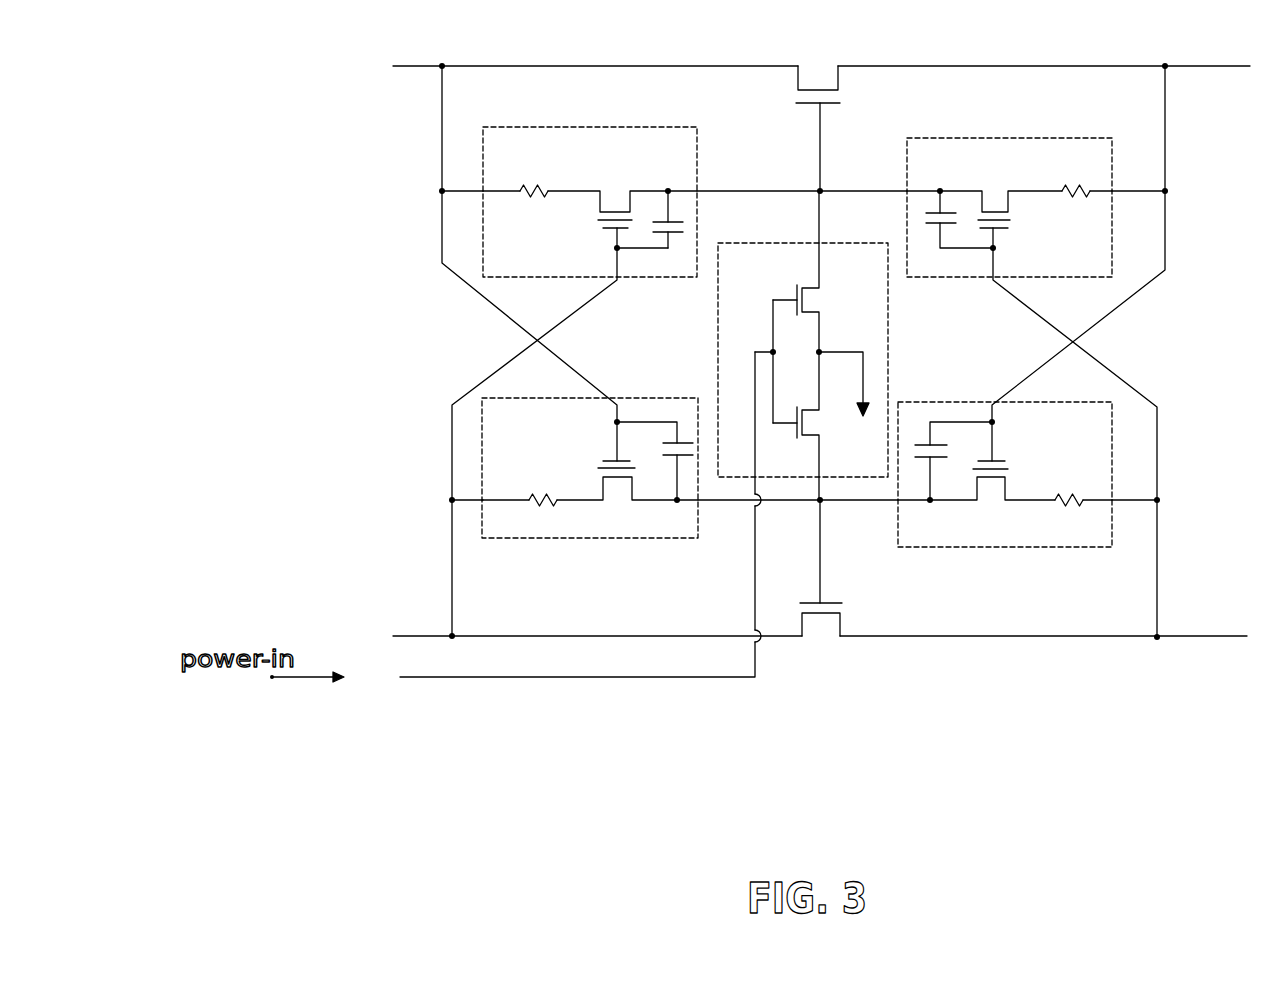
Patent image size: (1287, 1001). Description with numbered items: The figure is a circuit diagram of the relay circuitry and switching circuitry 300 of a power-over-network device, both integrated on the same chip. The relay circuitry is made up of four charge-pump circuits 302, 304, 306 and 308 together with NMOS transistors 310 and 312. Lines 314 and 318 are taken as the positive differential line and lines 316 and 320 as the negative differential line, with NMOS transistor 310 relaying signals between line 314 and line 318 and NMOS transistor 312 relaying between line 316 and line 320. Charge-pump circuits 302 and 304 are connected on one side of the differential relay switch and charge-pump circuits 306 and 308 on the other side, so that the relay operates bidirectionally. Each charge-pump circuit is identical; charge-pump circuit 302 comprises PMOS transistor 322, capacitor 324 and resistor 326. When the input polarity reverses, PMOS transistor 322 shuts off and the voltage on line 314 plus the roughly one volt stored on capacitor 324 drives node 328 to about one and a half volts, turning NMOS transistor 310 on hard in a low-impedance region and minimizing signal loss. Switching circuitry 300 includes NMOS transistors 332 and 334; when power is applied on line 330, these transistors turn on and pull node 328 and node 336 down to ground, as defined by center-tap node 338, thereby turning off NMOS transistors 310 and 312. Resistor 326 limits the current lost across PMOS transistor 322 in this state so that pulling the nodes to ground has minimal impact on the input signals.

The switching circuitry 300 is at (838, 345).
The charge-pump circuit 302 is at (619, 178).
The charge-pump circuit 304 is at (566, 540).
The charge-pump circuit 306 is at (993, 138).
The charge-pump circuit 308 is at (983, 552).
The NMOS transistor 310 is at (843, 80).
The NMOS transistor 312 is at (840, 625).
The line 314 is at (497, 63).
The line 316 is at (420, 632).
The line 318 is at (917, 65).
The line 320 is at (1195, 637).
The PMOS transistor 322 is at (597, 207).
The capacitor 324 is at (683, 237).
The resistor 326 is at (532, 177).
The node 328 is at (797, 188).
The line 330 is at (418, 678).
The NMOS transistor 332 is at (815, 285).
The NMOS transistor 334 is at (810, 440).
The node 336 is at (895, 503).
The center-tap node 338 is at (822, 330).